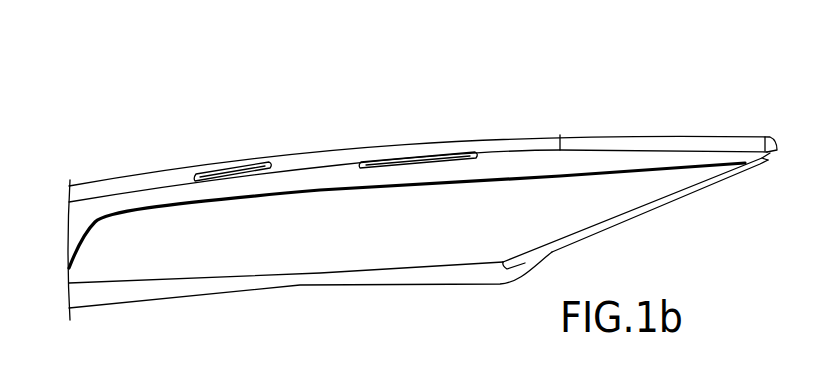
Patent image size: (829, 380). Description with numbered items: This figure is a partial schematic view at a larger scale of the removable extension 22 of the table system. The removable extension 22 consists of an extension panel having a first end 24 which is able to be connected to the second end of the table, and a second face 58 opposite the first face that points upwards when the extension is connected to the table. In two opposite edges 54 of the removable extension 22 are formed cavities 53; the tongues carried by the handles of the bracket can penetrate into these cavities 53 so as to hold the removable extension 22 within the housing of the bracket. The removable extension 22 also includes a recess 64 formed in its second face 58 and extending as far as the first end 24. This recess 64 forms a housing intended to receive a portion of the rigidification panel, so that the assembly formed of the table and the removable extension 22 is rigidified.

The removable extension 22 is at (562, 109).
The first end 24 is at (633, 215).
The cavities 53 is at (242, 177).
The opposite edges 54 is at (370, 150).
The second face 58 is at (640, 157).
The recess 64 is at (343, 247).